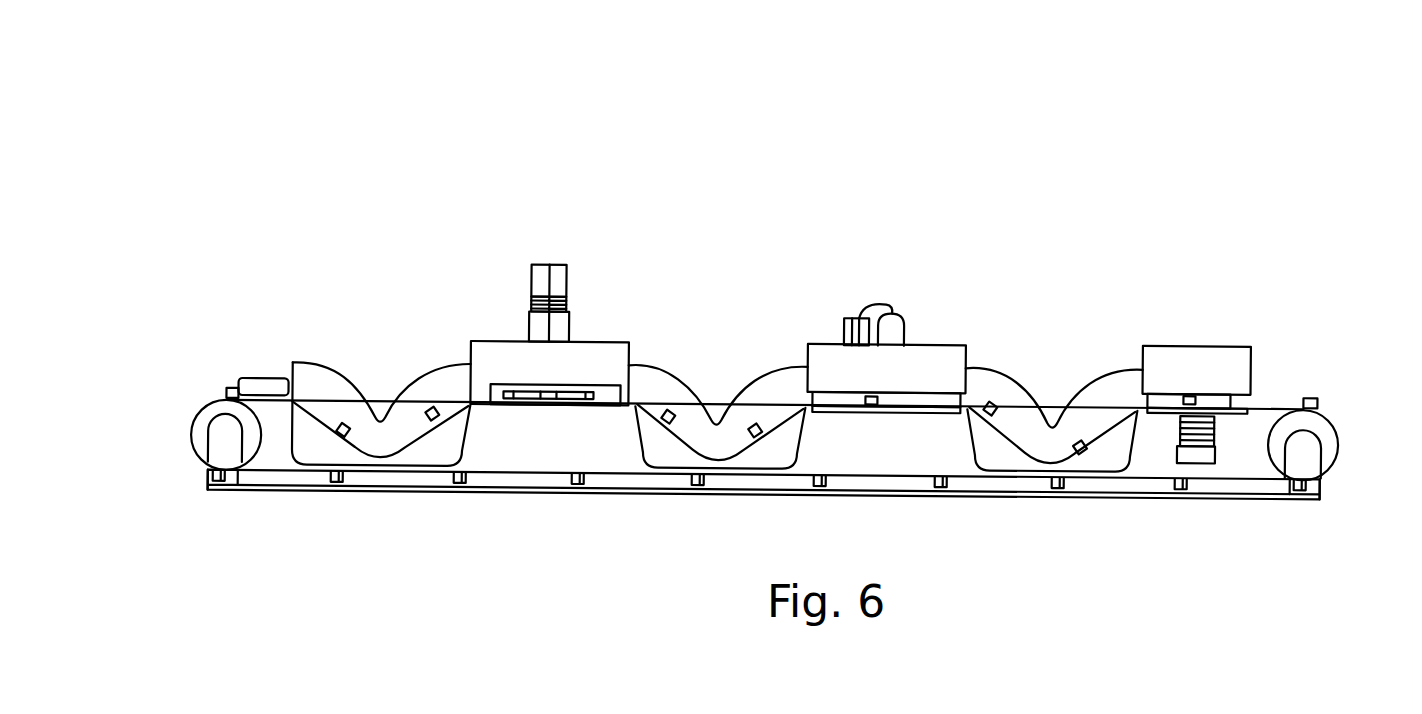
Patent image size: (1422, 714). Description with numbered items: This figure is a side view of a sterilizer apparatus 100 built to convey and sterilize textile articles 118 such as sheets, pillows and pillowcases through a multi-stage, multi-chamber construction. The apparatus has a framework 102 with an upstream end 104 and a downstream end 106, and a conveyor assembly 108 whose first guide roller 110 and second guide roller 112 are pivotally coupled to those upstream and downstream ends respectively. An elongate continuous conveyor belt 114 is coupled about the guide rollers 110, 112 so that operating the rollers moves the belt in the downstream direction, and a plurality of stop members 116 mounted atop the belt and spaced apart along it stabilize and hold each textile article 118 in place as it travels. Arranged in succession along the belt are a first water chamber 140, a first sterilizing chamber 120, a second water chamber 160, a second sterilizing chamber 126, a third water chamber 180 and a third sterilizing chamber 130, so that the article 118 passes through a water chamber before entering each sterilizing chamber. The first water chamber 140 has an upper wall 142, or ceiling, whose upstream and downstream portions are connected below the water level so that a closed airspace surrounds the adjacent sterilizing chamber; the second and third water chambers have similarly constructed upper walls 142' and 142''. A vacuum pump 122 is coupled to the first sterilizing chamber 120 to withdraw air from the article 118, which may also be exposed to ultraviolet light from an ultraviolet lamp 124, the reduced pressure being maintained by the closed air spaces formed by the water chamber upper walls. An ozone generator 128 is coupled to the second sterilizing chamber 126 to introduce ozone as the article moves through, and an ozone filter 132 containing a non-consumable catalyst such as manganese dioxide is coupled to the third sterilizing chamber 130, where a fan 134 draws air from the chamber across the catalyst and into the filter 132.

The sterilizer apparatus 100 is at (706, 160).
The framework 102 is at (231, 497).
The upstream end 104 is at (208, 481).
The downstream end 106 is at (1310, 494).
The conveyor assembly 108 is at (215, 394).
The first guide roller 110 is at (200, 425).
The second guide roller 112 is at (1327, 424).
The conveyor belt 114 is at (377, 410).
The stop member 116 is at (343, 436).
The textile article 118 is at (258, 390).
The first sterilizing chamber 120 is at (548, 326).
The vacuum pump 122 is at (532, 330).
The ultraviolet lamp 124 is at (510, 390).
The second sterilizing chamber 126 is at (888, 335).
The ozone generator 128 is at (847, 334).
The third sterilizing chamber 130 is at (1210, 331).
The ozone filter 132 is at (1207, 443).
The fan 134 is at (1173, 443).
The first water chamber 140 is at (327, 450).
The upper wall 142 is at (381, 345).
The upper wall 142' is at (718, 362).
The upper wall 142'' is at (1054, 364).
The second water chamber 160 is at (662, 447).
The third water chamber 180 is at (997, 448).